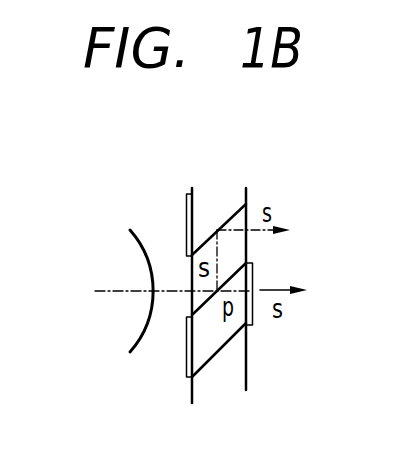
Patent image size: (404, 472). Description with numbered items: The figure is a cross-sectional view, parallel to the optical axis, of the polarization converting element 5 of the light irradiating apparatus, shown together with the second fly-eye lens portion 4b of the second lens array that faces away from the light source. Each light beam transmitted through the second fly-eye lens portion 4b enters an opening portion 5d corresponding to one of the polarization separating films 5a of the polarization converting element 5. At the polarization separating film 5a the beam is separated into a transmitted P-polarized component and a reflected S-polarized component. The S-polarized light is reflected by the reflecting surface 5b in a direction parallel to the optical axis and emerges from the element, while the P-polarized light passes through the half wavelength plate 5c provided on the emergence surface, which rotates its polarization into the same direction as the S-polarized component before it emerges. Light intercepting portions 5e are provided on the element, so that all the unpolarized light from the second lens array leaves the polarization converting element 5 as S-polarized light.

The second fly-eye lens portion 4b is at (137, 235).
The polarization converting element 5 is at (209, 277).
The polarization separating film 5a is at (209, 301).
The reflecting surface 5b is at (210, 233).
The half wavelength plate 5c is at (254, 266).
The opening portion 5d is at (214, 288).
The light intercepting portion 5e is at (185, 221).